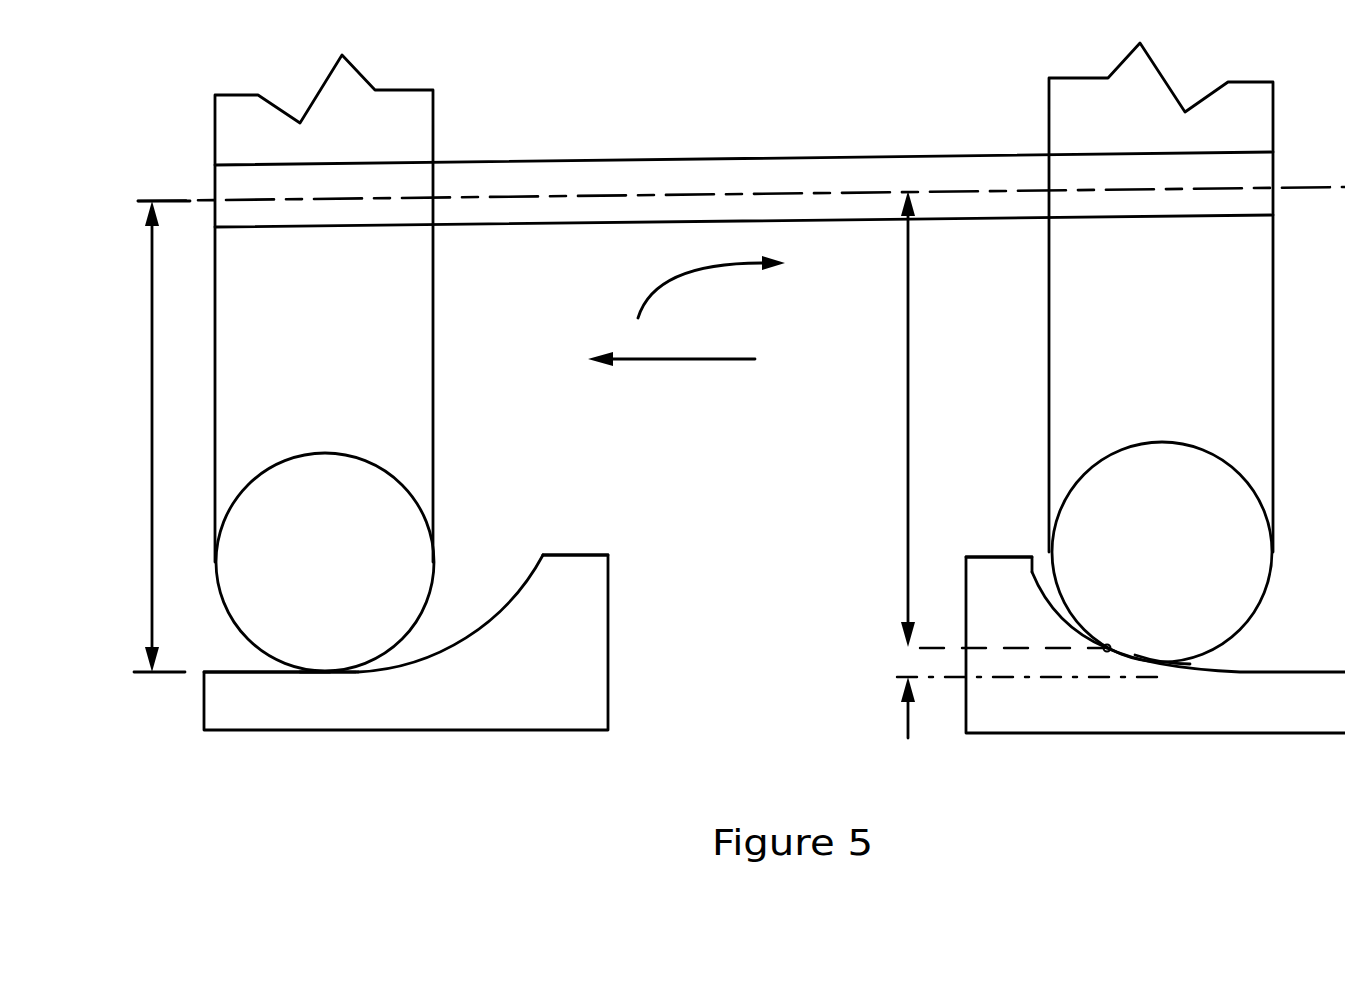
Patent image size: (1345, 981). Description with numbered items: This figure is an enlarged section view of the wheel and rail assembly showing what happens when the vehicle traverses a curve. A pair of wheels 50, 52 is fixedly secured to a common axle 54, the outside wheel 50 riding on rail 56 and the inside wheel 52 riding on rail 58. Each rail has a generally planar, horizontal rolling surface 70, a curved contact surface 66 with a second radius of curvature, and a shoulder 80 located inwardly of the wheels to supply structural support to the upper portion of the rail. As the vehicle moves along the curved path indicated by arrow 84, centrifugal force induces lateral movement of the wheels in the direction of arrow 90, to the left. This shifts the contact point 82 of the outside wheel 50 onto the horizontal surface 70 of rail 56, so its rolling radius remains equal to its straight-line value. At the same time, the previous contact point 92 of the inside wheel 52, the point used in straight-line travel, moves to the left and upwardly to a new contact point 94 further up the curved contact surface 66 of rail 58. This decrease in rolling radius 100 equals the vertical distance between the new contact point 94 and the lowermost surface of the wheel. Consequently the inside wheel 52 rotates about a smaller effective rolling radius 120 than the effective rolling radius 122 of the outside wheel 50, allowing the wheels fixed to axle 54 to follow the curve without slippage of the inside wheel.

The wheel 50 is at (433, 278).
The wheel 52 is at (1047, 293).
The axle 54 is at (591, 160).
The rail 56 is at (530, 705).
The rail 58 is at (1153, 712).
The curved contact surface 66 is at (527, 598).
The horizontal rolling surface 70 is at (240, 672).
The shoulder 80 is at (572, 555).
The contact point 82 is at (328, 673).
The arrow 84 is at (680, 280).
The arrow 90 is at (692, 359).
The previous contact point 92 is at (1168, 660).
The new contact point 94 is at (1106, 651).
The decrease in the rolling radius 100 is at (908, 657).
The effective rolling radius 120 is at (908, 372).
The effective rolling radius 122 is at (152, 367).